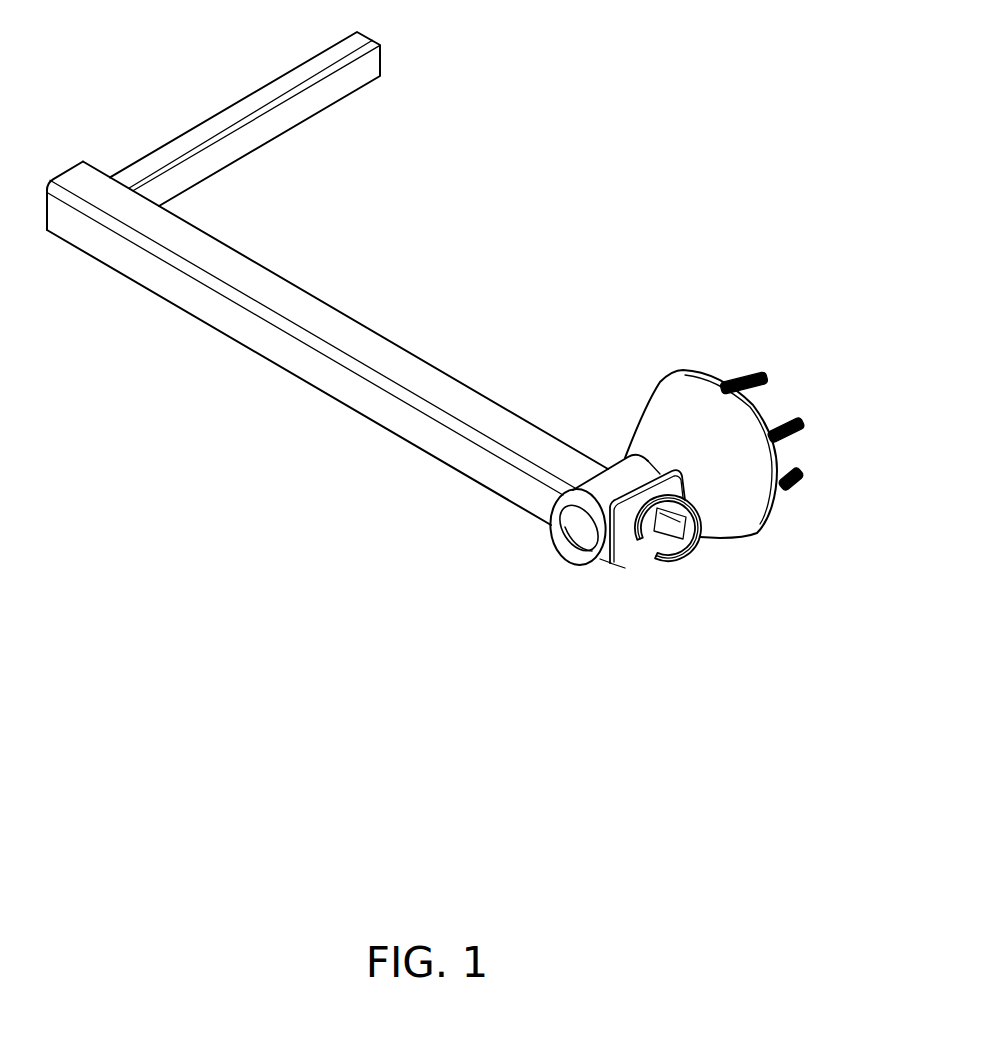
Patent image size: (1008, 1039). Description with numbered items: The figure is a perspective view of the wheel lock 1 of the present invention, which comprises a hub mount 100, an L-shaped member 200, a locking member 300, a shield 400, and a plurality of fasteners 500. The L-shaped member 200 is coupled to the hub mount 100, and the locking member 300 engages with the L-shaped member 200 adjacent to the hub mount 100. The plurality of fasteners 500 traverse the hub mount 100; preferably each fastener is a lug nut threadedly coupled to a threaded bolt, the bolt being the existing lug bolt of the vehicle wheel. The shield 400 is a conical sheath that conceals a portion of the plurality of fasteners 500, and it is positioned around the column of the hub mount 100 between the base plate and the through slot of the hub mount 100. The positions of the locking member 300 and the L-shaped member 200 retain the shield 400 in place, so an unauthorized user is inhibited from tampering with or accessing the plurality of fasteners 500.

The connector assembly 1 is at (463, 325).
The hub mount 100 is at (590, 560).
The L-shaped member 200 is at (348, 387).
The locking member 300 is at (650, 547).
The shield 400 is at (655, 410).
The plurality of fasteners 500 is at (797, 486).